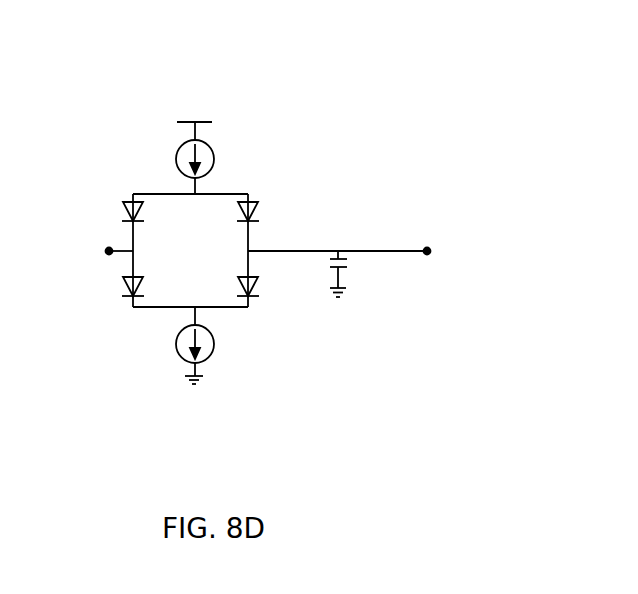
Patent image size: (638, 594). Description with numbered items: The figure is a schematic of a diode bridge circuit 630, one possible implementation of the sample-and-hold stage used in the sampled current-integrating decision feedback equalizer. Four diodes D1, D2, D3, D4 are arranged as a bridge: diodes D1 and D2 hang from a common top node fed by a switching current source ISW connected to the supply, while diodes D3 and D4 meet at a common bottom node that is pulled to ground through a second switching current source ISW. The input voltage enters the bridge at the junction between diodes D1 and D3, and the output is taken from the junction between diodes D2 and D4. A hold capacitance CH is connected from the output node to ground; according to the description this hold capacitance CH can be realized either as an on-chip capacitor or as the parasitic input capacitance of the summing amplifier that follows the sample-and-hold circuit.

The diode bridge circuit 630 is at (153, 88).
The diode D1 is at (147, 216).
The diode D2 is at (261, 216).
The diode D3 is at (147, 281).
The diode D4 is at (261, 281).
The hold capacitance CH is at (353, 274).
The switching current source ISW is at (216, 159).